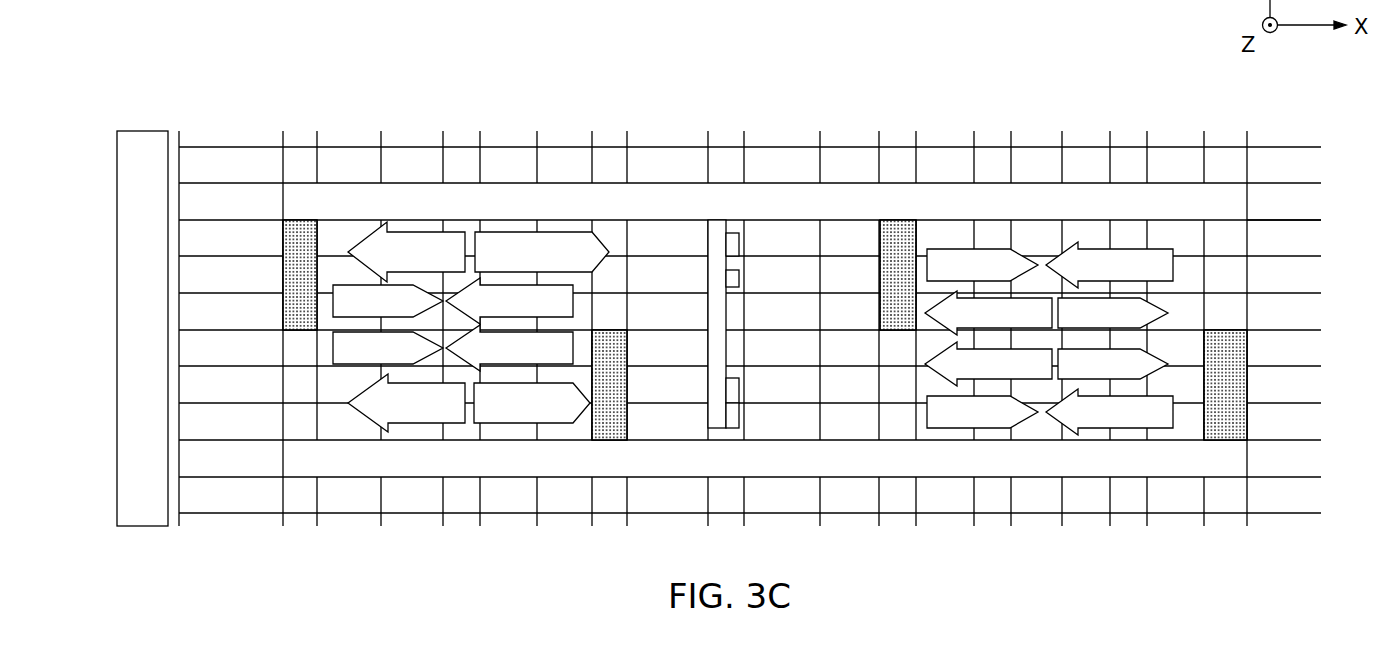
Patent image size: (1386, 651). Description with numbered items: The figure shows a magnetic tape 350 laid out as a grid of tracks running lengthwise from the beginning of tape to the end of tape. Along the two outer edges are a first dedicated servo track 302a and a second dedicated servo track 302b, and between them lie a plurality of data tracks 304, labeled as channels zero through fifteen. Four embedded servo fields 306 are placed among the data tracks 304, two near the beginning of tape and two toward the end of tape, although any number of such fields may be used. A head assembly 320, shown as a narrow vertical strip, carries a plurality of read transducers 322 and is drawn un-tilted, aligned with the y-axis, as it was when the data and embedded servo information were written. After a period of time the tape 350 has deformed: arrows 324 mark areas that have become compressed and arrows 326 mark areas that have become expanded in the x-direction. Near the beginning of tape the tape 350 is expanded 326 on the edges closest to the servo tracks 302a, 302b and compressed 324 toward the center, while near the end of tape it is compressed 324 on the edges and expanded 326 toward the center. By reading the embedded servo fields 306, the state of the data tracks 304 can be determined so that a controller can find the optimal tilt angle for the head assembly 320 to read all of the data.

The magnetic tape 350 is at (92, 182).
The first dedicated servo track 302a is at (850, 212).
The second dedicated servo track 302b is at (842, 469).
The data tracks 304 is at (1284, 327).
The embedded servo fields 306 is at (290, 258).
The head assembly 320 is at (716, 231).
The read transducers 322 is at (739, 244).
The compression arrows 324 is at (753, 338).
The expansion arrows 326 is at (758, 327).